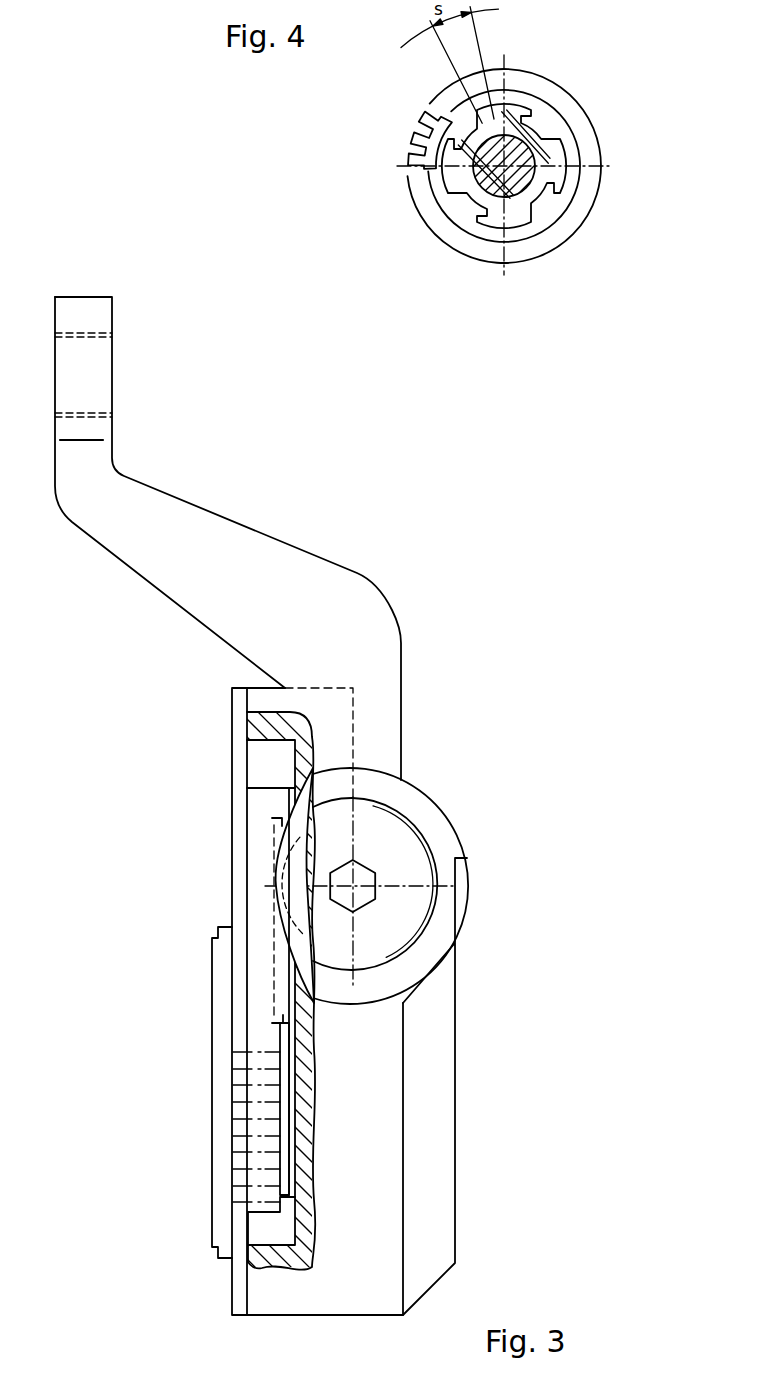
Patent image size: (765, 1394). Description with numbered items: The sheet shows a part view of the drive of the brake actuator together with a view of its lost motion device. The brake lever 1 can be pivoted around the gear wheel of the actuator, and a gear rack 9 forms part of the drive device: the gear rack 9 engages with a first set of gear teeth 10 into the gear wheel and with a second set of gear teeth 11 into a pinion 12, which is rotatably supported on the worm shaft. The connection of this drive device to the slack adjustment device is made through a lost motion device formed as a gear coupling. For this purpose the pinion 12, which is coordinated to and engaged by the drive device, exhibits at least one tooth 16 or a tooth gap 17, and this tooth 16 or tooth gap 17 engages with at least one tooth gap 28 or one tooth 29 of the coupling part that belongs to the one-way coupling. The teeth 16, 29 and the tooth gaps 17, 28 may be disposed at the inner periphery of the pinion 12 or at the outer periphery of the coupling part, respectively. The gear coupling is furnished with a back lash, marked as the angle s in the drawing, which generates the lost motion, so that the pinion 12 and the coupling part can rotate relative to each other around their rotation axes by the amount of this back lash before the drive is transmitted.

In FIG. 3, the brake lever 1 is at (155, 575).
In FIG. 3, the gear rack 9 is at (257, 902).
In FIG. 3, the first set of gear teeth 10 is at (270, 1135).
In FIG. 3, the second set of gear teeth 11 is at (278, 977).
In FIG. 4, the pinion 12 is at (455, 117).
In FIG. 3, the pinion 12 is at (285, 863).
In FIG. 4, the tooth 16 is at (543, 207).
In FIG. 4, the tooth gap 17 is at (480, 227).
In FIG. 4, the tooth gap 28 is at (540, 133).
In FIG. 4, the tooth 29 is at (555, 173).